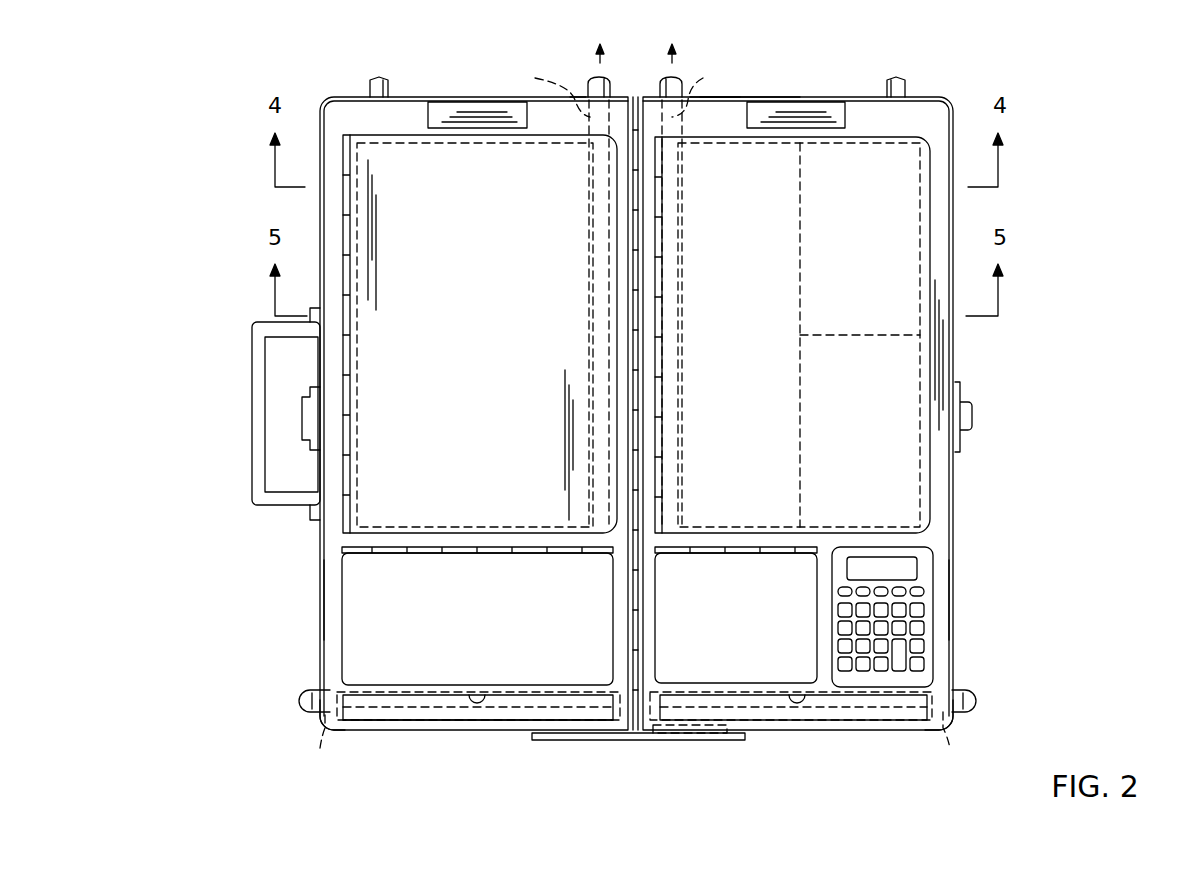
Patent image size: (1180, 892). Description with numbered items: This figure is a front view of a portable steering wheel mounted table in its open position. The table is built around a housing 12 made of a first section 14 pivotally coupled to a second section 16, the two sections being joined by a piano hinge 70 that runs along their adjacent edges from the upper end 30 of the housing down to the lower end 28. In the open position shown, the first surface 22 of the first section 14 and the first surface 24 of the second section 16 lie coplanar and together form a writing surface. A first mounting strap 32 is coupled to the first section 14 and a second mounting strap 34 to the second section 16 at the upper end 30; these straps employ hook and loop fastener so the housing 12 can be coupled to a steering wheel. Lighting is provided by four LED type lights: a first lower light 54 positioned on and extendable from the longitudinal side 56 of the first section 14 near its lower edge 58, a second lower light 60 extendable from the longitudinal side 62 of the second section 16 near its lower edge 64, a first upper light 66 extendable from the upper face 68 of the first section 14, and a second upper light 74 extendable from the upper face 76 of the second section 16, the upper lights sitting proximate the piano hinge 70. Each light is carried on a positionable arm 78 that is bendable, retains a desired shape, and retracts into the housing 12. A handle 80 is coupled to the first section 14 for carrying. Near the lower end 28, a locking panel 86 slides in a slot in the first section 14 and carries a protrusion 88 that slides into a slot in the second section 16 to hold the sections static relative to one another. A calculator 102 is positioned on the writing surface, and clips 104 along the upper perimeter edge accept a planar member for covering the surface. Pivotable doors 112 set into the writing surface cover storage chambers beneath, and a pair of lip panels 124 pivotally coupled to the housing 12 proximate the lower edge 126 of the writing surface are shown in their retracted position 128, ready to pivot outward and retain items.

The housing 12 is at (953, 483).
The first section 14 is at (341, 546).
The second section 16 is at (942, 540).
The first surface 22 is at (480, 334).
The first surface 24 is at (792, 335).
The lower end 28 is at (480, 730).
The upper end 30 is at (758, 96).
The first mounting strap 32 is at (372, 80).
The second mounting strap 34 is at (900, 83).
The first lower light 54 is at (308, 720).
The longitudinal side 56 is at (322, 620).
The lower edge 58 is at (318, 728).
The second lower light 60 is at (962, 692).
The longitudinal side 62 is at (952, 628).
The lower edge 64 is at (957, 724).
The first upper light 66 is at (592, 77).
The upper face 68 is at (578, 94).
The piano hinge 70 is at (633, 97).
The second upper light 74 is at (680, 77).
The upper face 76 is at (722, 96).
The positionable arm 78 is at (629, 407).
The handle 80 is at (258, 437).
The locking panel 86 is at (608, 740).
The protrusion 88 is at (675, 733).
The calculator 102 is at (920, 566).
The clips 104 is at (480, 106).
The pivotable doors 112 is at (415, 150).
The lip panels 124 is at (445, 712).
The lower edge 126 is at (380, 723).
The retracted position 128 is at (405, 714).